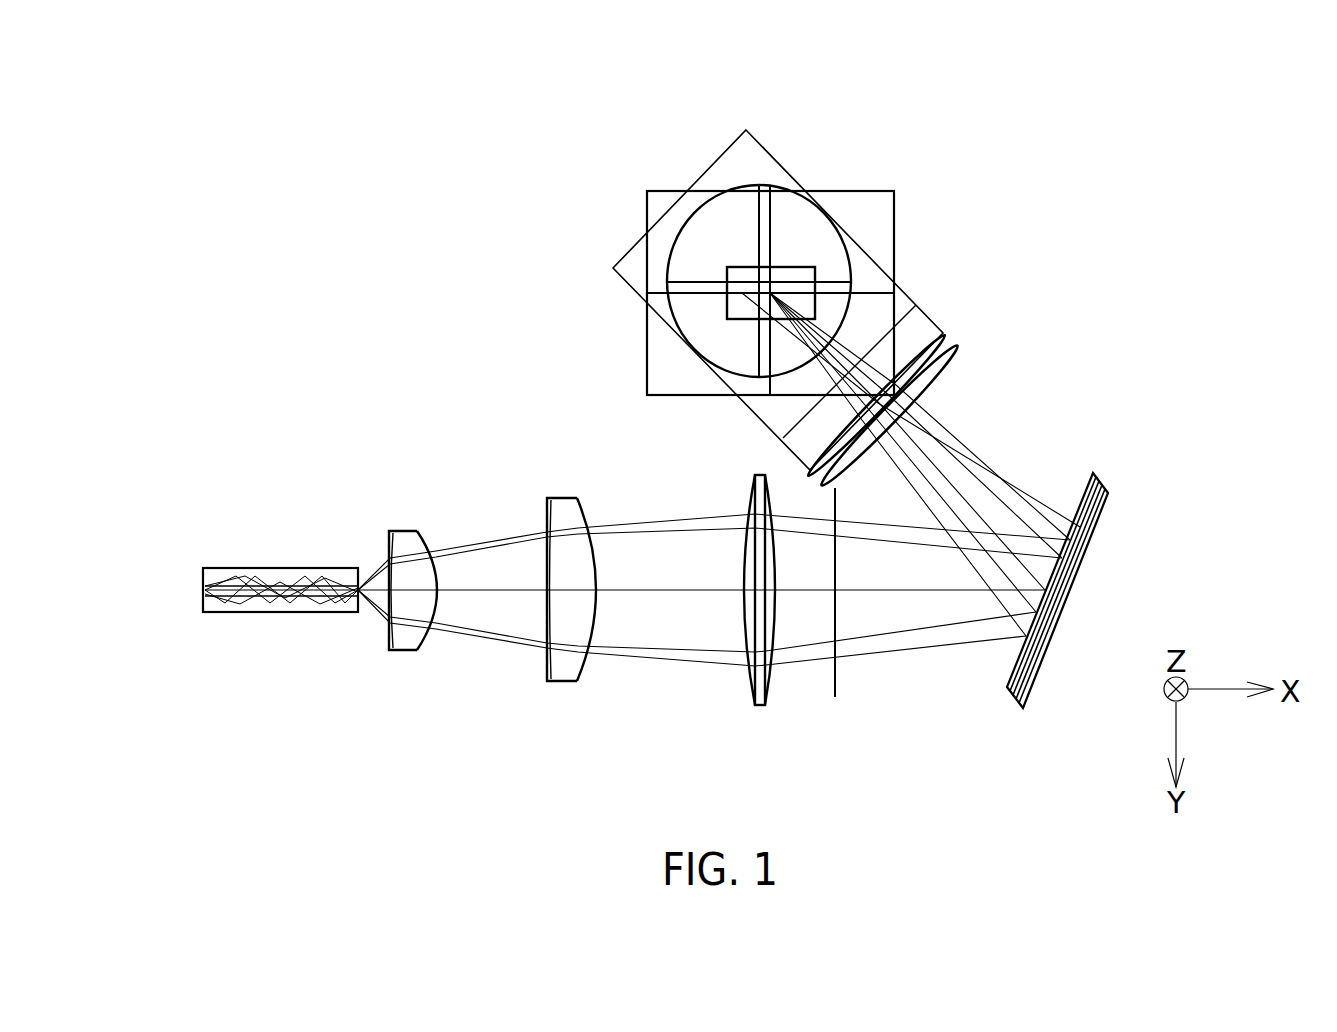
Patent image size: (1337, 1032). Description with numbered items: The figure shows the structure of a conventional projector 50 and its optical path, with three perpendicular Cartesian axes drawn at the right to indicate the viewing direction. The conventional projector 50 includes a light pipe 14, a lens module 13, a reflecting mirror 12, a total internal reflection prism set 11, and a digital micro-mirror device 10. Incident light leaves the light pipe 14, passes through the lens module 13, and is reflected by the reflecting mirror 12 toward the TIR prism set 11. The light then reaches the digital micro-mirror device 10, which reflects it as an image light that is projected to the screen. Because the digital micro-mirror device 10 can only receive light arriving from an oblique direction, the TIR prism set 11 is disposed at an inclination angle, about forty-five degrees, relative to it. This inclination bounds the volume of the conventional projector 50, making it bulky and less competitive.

The conventional projector 50 is at (385, 128).
The digital micro-mirror device 10 is at (800, 266).
The total internal reflection (TIR) prism set 11 is at (878, 343).
The reflecting mirror 12 is at (1068, 603).
The lens module 13 is at (380, 702).
The light pipe 14 is at (282, 567).